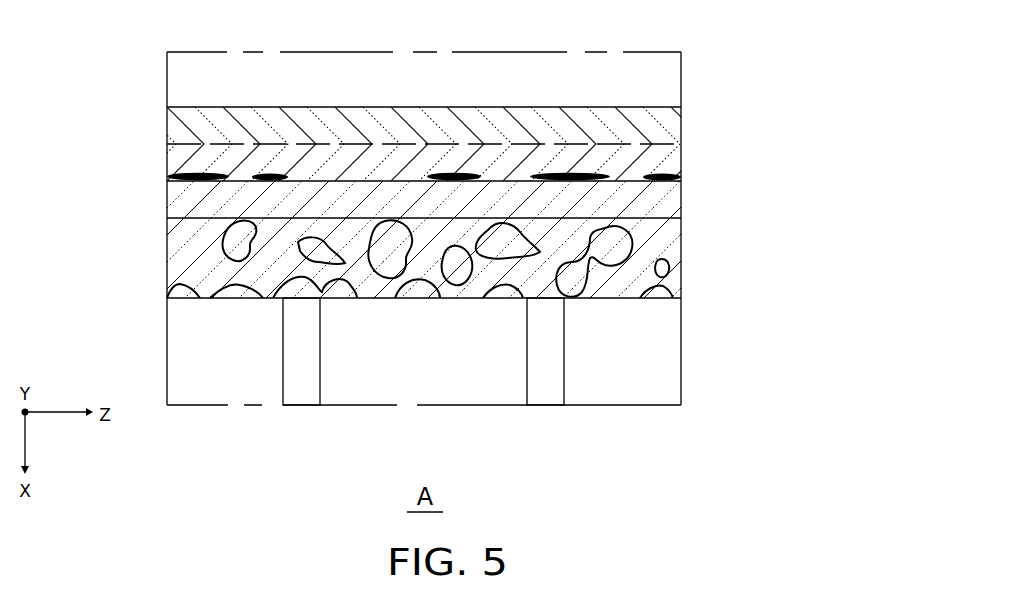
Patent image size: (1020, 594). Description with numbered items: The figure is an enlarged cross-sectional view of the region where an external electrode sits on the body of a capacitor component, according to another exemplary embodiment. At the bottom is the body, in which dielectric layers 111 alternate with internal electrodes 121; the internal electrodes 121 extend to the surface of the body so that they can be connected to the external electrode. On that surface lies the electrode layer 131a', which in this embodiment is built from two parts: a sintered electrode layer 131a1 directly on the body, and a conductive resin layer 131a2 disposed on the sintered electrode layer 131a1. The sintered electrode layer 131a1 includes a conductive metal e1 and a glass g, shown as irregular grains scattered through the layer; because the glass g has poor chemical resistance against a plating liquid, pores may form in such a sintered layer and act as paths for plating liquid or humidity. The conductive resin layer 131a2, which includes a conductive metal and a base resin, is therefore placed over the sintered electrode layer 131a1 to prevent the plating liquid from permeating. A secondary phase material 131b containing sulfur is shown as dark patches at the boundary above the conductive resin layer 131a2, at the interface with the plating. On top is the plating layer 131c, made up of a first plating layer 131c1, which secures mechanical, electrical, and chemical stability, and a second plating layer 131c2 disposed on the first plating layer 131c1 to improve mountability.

The dielectric layer 111 is at (417, 390).
The internal electrode 121 is at (300, 392).
The plating layer 131c is at (522, 136).
The second plating layer 131c2 is at (668, 125).
The first plating layer 131c1 is at (668, 158).
The secondary phase material 131b is at (670, 171).
The electrode layer 131a' is at (552, 239).
The conductive resin layer 131a2 is at (668, 202).
The sintered electrode layer 131a1 is at (506, 257).
The glass g is at (632, 240).
The conductive metal e1 is at (666, 278).